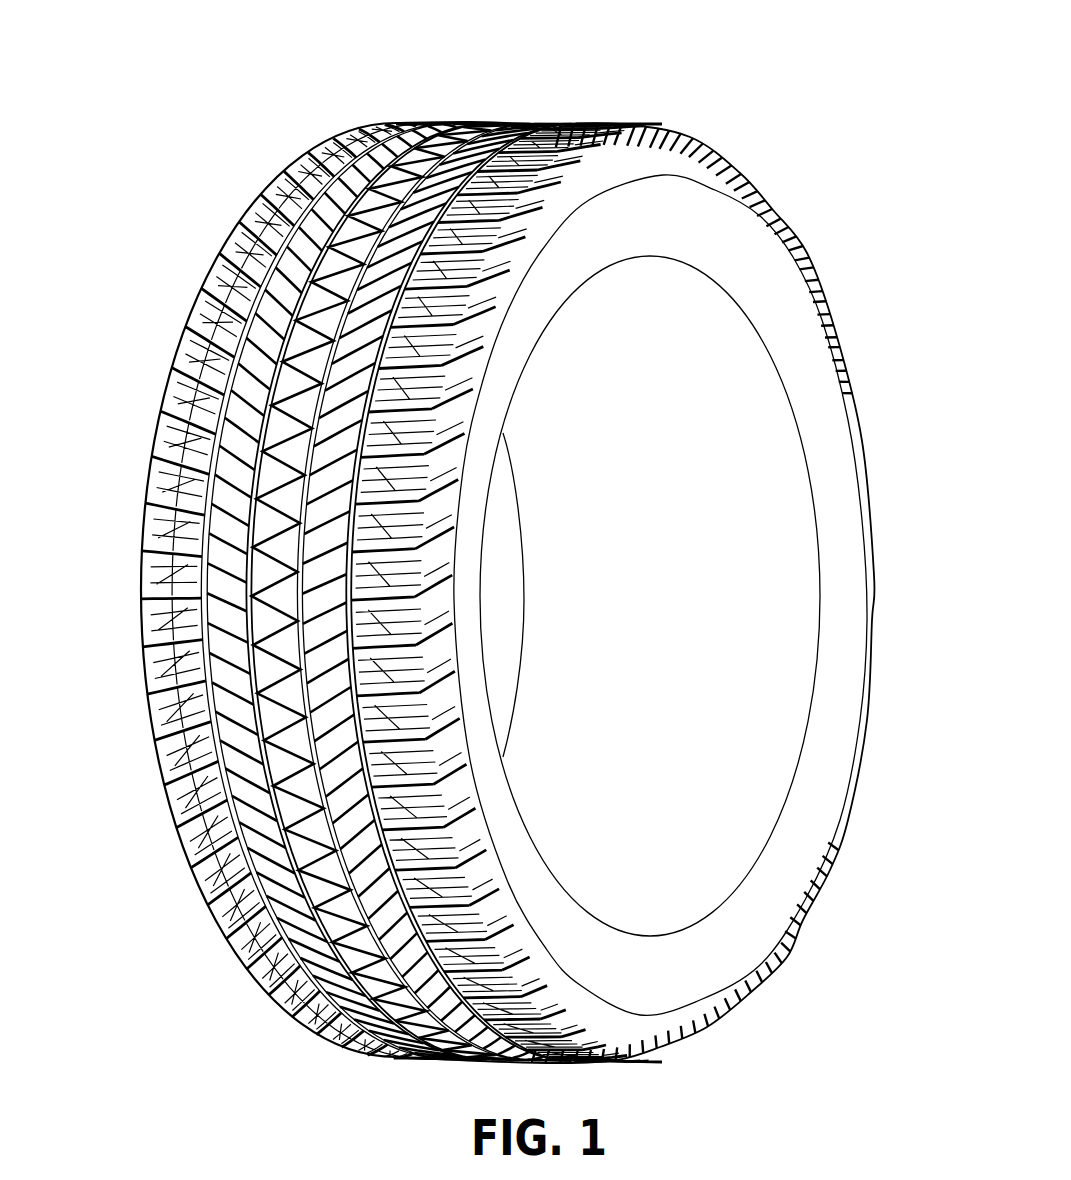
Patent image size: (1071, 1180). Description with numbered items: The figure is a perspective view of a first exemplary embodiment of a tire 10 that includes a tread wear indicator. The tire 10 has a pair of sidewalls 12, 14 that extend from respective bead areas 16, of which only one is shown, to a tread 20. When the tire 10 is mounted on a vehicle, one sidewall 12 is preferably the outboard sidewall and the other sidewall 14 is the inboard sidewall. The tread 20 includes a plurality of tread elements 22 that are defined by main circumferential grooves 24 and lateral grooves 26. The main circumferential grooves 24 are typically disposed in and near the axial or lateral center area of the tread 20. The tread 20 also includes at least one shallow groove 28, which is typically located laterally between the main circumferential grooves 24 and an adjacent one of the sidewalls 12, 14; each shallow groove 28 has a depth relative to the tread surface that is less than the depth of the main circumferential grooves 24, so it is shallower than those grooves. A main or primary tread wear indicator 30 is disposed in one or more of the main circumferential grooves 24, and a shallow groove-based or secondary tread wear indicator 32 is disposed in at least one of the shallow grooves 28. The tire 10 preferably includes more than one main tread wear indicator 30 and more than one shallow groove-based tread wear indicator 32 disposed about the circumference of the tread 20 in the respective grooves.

The tire 10 is at (197, 92).
The sidewall 12 is at (683, 218).
The sidewall 14 is at (518, 510).
The bead area 16 is at (786, 386).
The tread 20 is at (474, 546).
The tread element 22 is at (236, 473).
The main circumferential groove 24 is at (256, 556).
The lateral groove 26 is at (236, 464).
The shallow groove 28 is at (492, 169).
The main tread wear indicator 30 is at (322, 312).
The shallow groove-based tread wear indicator 32 is at (479, 265).